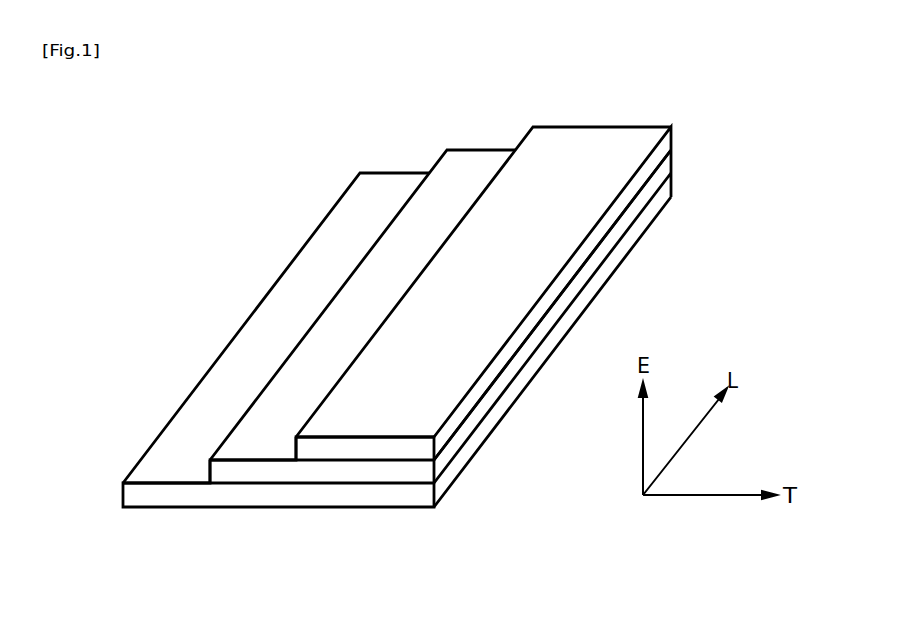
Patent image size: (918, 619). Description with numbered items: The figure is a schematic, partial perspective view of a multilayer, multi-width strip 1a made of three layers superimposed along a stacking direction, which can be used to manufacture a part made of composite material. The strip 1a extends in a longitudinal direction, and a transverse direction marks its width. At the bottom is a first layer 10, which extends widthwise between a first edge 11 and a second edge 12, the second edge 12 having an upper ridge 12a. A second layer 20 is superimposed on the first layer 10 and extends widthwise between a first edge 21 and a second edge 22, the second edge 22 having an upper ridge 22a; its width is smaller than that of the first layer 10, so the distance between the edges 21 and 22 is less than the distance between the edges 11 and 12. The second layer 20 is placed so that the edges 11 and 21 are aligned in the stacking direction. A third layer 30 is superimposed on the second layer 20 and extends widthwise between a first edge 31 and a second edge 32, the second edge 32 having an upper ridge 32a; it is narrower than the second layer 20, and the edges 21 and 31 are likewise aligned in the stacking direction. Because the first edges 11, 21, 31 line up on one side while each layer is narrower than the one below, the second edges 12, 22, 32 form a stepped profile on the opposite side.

The multilayer strip 1a is at (278, 283).
The first layer 10 is at (386, 368).
The first edge 11 is at (671, 190).
The second edge 12 is at (340, 201).
The upper ridge 12a is at (122, 485).
The second layer 20 is at (403, 346).
The first edge 21 is at (671, 162).
The second edge 22 is at (437, 163).
The upper ridge 22a is at (208, 460).
The third layer 30 is at (416, 331).
The first edge 31 is at (671, 131).
The second edge 32 is at (524, 138).
The upper ridge 32a is at (296, 437).